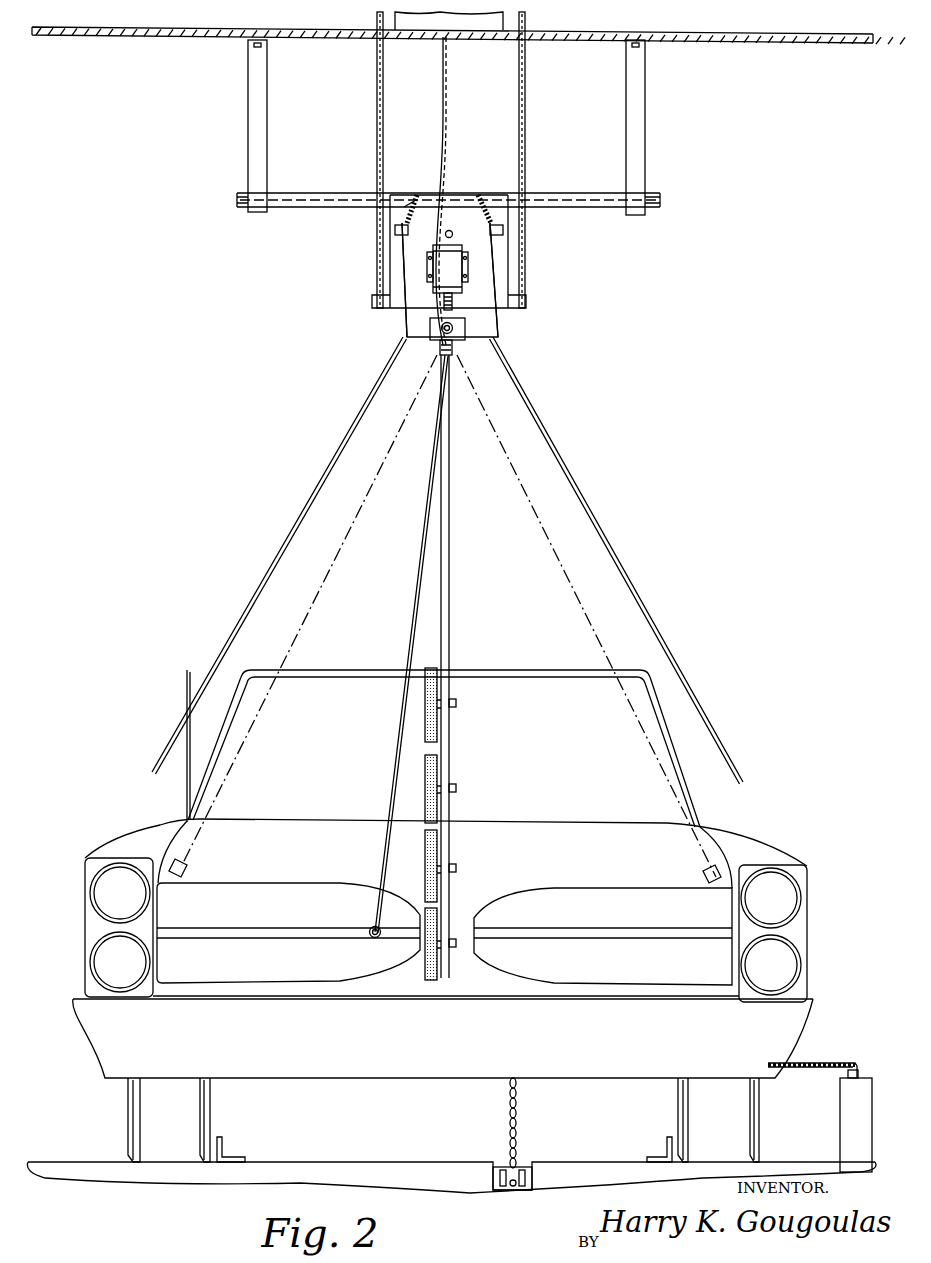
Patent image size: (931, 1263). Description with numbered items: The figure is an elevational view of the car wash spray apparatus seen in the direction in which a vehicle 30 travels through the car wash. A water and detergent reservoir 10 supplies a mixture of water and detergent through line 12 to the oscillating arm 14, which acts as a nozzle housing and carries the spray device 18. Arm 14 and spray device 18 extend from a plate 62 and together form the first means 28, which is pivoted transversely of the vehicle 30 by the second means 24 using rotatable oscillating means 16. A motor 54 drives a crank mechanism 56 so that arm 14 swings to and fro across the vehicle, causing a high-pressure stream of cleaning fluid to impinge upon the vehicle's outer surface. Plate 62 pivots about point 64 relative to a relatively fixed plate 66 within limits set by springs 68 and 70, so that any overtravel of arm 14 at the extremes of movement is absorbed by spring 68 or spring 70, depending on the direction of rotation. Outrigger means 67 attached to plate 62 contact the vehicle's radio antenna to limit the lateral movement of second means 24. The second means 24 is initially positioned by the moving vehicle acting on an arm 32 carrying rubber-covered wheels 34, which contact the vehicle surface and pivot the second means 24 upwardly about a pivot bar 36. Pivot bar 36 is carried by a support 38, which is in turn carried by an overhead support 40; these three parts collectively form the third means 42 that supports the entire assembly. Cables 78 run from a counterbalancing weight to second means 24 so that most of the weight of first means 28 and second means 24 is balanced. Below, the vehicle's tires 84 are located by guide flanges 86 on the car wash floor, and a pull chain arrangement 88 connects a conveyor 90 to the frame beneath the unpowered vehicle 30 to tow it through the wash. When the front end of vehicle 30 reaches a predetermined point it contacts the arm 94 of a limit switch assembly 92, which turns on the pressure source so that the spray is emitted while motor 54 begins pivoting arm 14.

The water and detergent reservoir 10 is at (500, 23).
The line 12 is at (447, 92).
The oscillating arm 14 is at (413, 605).
The oscillating means 16 is at (432, 263).
The spray device 18 is at (368, 928).
The second means 24 is at (514, 315).
The first means 28 is at (454, 575).
The vehicle 30 is at (757, 840).
The arm 32 is at (450, 747).
The wheels 34 is at (424, 759).
The pivot bar 36 is at (650, 197).
The support 38 is at (639, 131).
The overhead support 40 is at (760, 43).
The third means 42 is at (563, 221).
The motor 54 is at (455, 267).
The crank mechanism 56 is at (456, 312).
The plate 62 is at (404, 321).
The point 64 is at (453, 235).
The fixed plate 66 is at (403, 196).
The outrigger means 67 is at (313, 487).
The spring 68 is at (403, 212).
The spring 70 is at (470, 197).
The cables 78 is at (377, 114).
The tires 84 is at (158, 1148).
The flanges 86 is at (224, 1147).
The pull chain arrangement 88 is at (507, 1127).
The conveyor 90 is at (532, 1163).
The limit switch assembly 92 is at (845, 1115).
The arm 94 is at (808, 1058).